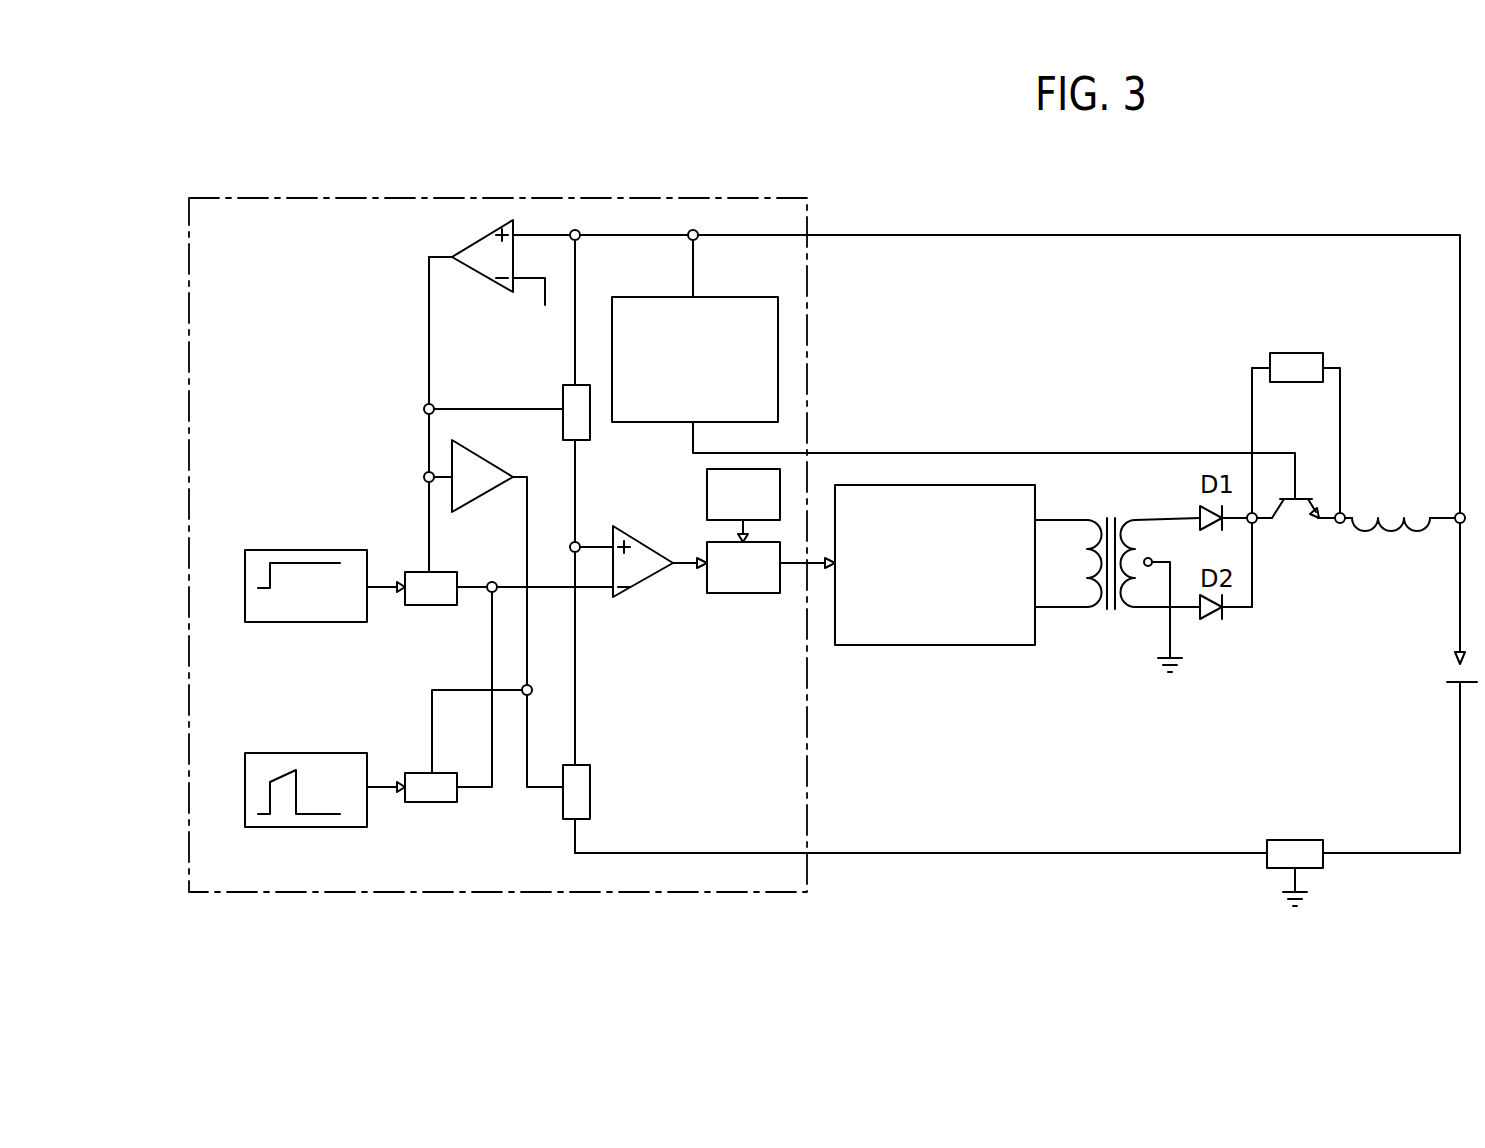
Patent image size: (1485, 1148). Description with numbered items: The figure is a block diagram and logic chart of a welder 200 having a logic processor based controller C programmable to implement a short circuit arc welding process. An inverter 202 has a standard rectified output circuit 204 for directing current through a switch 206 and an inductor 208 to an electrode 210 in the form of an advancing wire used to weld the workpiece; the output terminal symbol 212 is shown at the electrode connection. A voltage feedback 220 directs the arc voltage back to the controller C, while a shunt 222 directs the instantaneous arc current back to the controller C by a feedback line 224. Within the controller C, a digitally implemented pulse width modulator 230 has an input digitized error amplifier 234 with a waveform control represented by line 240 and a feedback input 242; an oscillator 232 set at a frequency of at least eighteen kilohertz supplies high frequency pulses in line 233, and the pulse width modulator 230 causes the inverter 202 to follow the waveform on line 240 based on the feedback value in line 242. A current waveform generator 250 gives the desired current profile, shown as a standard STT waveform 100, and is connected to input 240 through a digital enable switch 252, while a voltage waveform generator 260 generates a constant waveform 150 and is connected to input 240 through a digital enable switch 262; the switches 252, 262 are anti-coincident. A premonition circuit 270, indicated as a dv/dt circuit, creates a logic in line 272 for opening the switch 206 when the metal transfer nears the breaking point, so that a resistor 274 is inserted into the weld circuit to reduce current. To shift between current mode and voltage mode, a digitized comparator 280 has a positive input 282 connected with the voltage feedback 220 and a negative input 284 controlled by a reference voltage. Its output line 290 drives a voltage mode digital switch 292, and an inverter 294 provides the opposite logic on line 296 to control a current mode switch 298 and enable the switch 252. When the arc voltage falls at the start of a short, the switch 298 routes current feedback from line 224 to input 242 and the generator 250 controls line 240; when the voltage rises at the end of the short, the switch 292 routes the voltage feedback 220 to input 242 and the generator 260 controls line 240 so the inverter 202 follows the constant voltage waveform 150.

The current waveform 100 is at (287, 788).
The constant voltage waveform 150 is at (315, 578).
The welder 200 is at (912, 212).
The inverter 202 is at (945, 485).
The rectified output circuit 204 is at (1057, 518).
The switch 206 is at (1290, 499).
The inductor 208 is at (1390, 507).
The electrode 210 is at (1453, 659).
The electrode 212 is at (1452, 684).
The voltage feedback 220 is at (1203, 235).
The shunt 222 is at (1292, 840).
The feedback line 224 is at (740, 853).
The pulse width modulator 230 is at (742, 593).
The oscillator 232 is at (760, 469).
The line 233 is at (815, 563).
The error amplifier 234 is at (638, 587).
The waveform control line 240 is at (592, 588).
The feedback input 242 is at (593, 542).
The current waveform generator 250 is at (245, 790).
The digital enable switch 252 is at (422, 803).
The voltage waveform generator 260 is at (245, 567).
The digital enable switch 262 is at (420, 608).
The premonition circuit 270 is at (782, 310).
The line 272 is at (1097, 453).
The resistor 274 is at (1300, 353).
The digitized comparator 280 is at (472, 240).
The positive input 282 is at (533, 235).
The negative input 284 is at (532, 277).
The output line 290 is at (428, 293).
The voltage mode digital switch 292 is at (563, 400).
The inverter 294 is at (463, 462).
The line 296 is at (542, 788).
The current mode switch 298 is at (567, 820).
The controller C is at (718, 173).